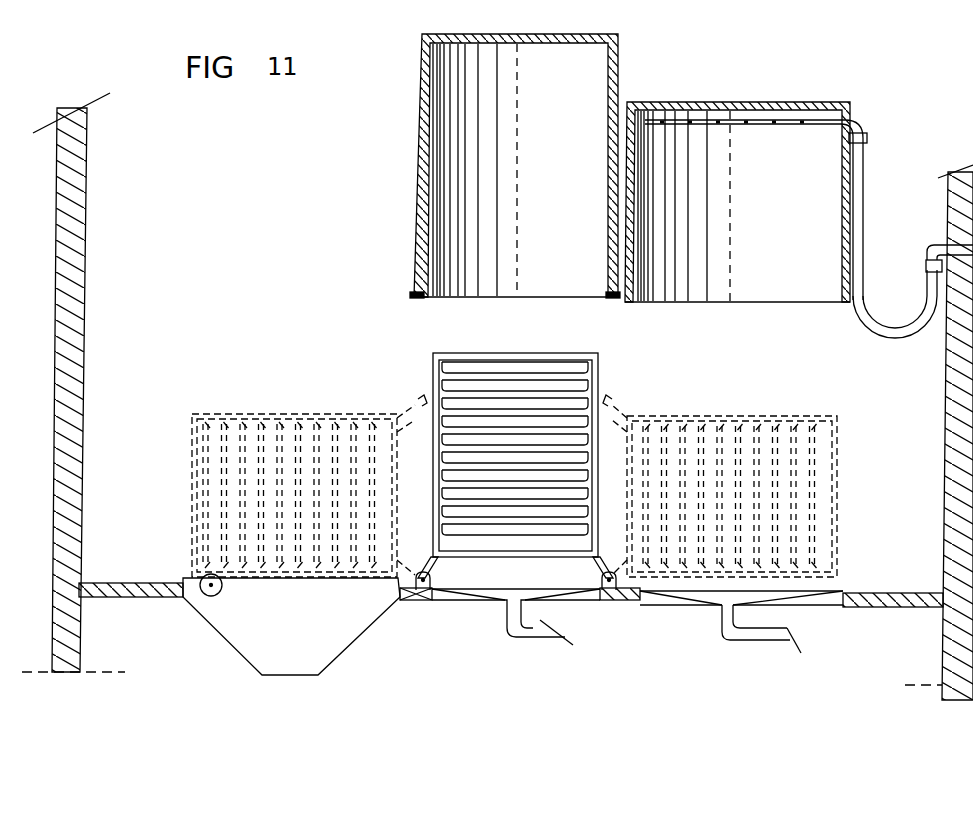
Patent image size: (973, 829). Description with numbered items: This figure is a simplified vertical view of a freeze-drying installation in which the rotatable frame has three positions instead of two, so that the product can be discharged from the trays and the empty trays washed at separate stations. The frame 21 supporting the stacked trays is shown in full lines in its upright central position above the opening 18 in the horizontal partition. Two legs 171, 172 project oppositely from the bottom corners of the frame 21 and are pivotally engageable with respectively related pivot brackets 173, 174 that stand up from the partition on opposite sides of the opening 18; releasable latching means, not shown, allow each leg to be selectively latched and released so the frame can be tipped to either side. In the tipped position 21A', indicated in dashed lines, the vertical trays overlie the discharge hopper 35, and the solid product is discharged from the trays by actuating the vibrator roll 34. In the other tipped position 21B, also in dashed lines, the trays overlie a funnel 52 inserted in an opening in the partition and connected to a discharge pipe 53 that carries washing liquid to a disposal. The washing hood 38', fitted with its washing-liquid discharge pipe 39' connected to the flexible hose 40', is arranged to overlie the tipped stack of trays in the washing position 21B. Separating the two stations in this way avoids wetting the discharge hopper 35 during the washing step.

The frame 21 is at (602, 356).
The tipped position 21A' is at (309, 481).
The tipped position 21B is at (808, 416).
The vibrator roll 34 is at (222, 588).
The discharge hopper 35 is at (220, 626).
The leg 171 is at (440, 574).
The leg 172 is at (590, 570).
The pivot bracket 173 is at (412, 603).
The pivot bracket 174 is at (606, 603).
The opening 18 is at (458, 600).
The funnel 52 is at (805, 611).
The discharge pipe 53 is at (727, 642).
The washing hood 38' is at (737, 191).
The washing-liquid discharge pipe 39' is at (756, 210).
The flexible hose 40' is at (913, 303).